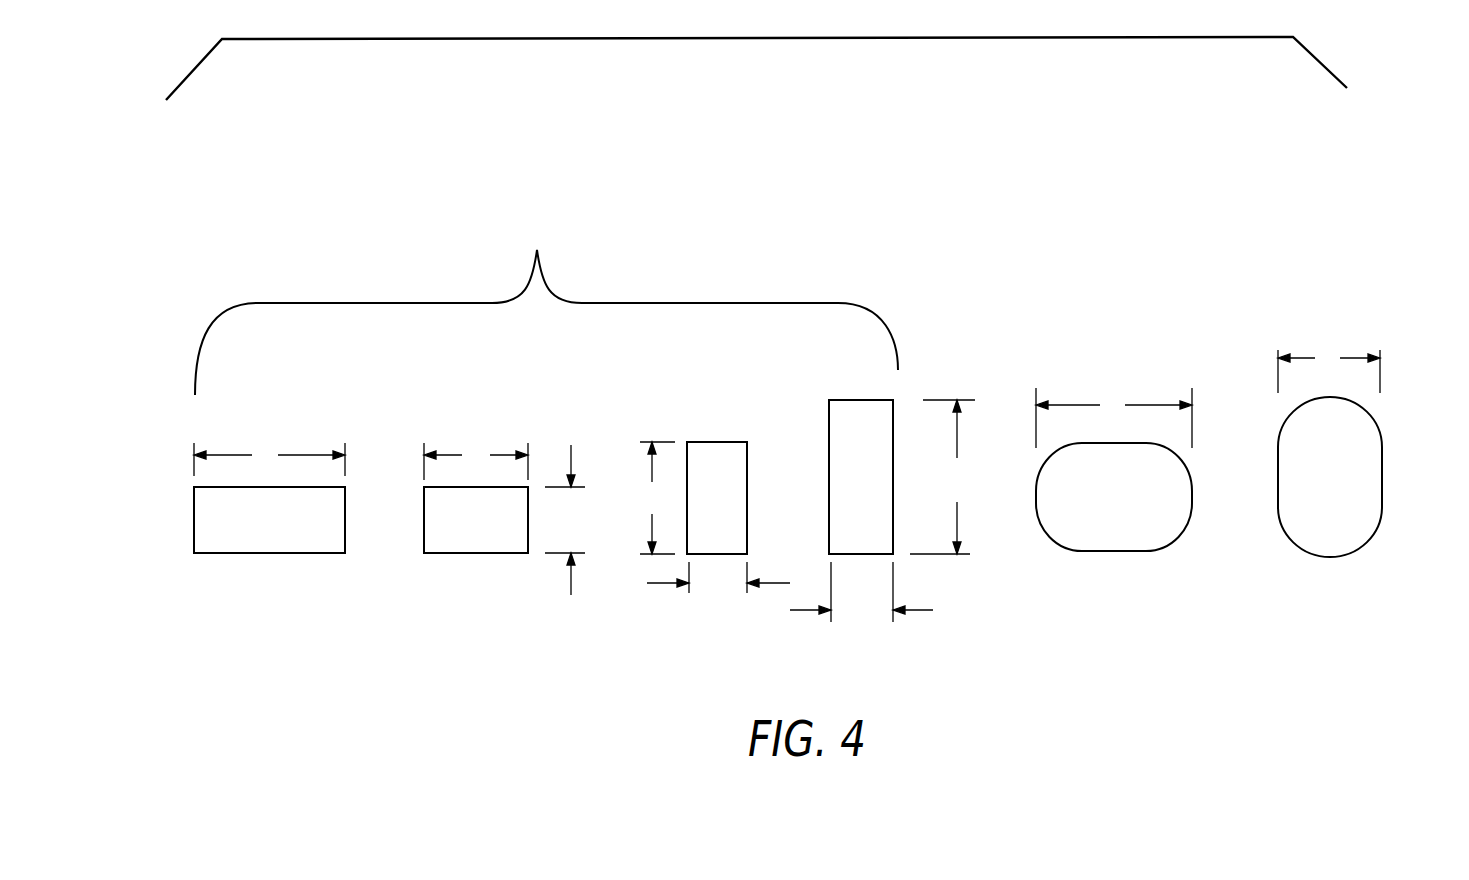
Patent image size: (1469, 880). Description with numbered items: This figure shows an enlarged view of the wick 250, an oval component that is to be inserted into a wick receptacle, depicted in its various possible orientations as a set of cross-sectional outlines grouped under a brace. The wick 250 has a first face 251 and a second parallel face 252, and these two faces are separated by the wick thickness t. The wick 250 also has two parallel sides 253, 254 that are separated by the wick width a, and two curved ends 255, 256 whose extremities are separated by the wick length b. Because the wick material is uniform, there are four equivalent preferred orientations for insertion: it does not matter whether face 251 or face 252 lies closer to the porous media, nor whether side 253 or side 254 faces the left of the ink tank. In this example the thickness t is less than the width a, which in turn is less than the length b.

The wick 250 is at (521, 197).
The first face 251 is at (850, 398).
The second parallel face 252 is at (894, 414).
The parallel side 253 is at (1280, 497).
The parallel side 254 is at (1384, 497).
The curved end 255 is at (1306, 400).
The curved end 256 is at (1330, 557).